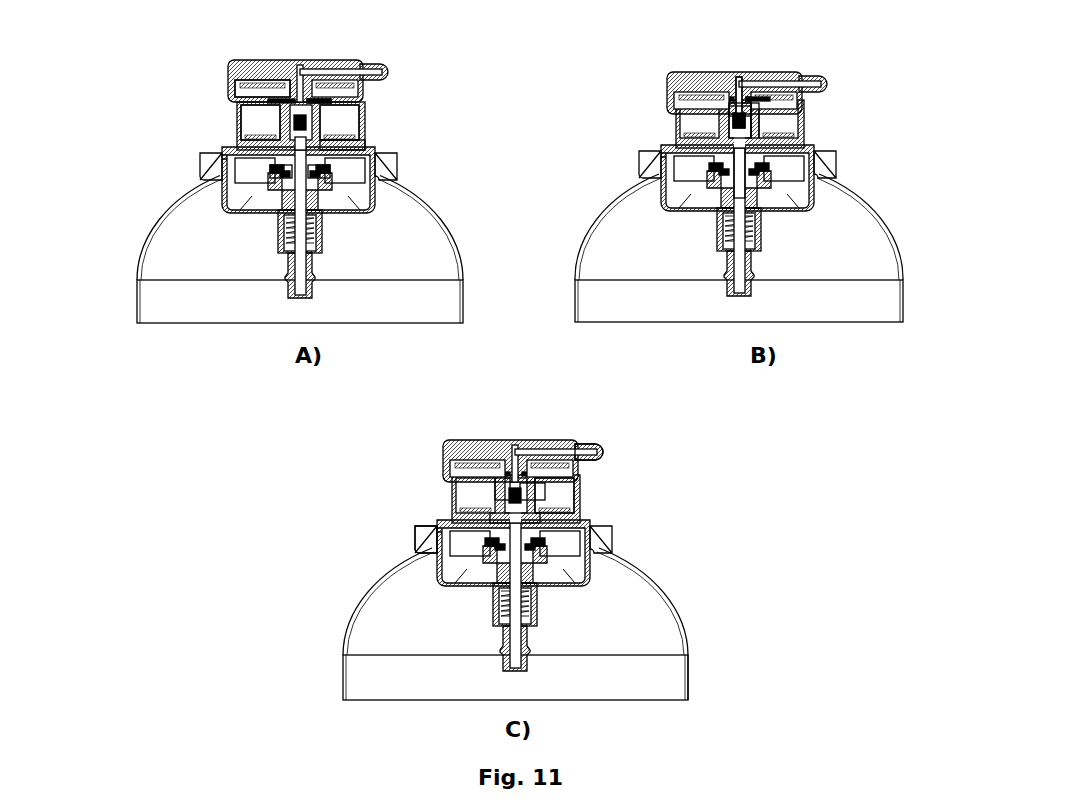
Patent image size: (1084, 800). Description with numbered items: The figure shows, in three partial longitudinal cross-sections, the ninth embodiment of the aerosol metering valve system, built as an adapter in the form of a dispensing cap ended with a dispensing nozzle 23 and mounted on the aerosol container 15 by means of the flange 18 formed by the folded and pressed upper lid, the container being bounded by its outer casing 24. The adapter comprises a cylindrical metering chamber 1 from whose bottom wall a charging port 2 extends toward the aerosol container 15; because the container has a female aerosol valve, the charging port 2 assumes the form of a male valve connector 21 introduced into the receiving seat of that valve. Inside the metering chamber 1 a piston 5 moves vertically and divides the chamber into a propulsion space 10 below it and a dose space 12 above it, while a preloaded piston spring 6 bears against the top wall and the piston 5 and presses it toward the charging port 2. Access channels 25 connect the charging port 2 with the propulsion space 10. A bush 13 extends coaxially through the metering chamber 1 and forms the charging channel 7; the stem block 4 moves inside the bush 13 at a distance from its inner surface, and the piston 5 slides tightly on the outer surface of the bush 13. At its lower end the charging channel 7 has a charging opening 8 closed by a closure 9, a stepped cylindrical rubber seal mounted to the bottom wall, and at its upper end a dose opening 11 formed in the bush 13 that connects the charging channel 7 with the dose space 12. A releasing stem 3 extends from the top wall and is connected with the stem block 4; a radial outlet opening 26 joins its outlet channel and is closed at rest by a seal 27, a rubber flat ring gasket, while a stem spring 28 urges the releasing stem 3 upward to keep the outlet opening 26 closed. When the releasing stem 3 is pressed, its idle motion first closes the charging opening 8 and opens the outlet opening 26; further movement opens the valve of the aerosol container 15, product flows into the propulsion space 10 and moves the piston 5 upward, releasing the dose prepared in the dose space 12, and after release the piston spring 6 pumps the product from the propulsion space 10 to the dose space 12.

The metering chamber 1 is at (732, 130).
The charging port 2 is at (730, 157).
The releasing stem 3 is at (747, 93).
The stem block 4 is at (538, 493).
The piston 5 is at (357, 140).
The piston spring 6 is at (340, 123).
The charging channel 7 is at (503, 495).
The charging opening 8 is at (298, 143).
The closure 9 is at (737, 132).
The propulsion space 10 is at (567, 508).
The dose opening 11 is at (320, 105).
The dose space 12 is at (252, 118).
The bush 13 is at (758, 130).
The aerosol container 15 is at (346, 631).
The flange 18 is at (418, 537).
The male valve connector 21 is at (290, 165).
The dispensing nozzle 23 is at (603, 453).
The outer casing 24 is at (688, 667).
The access channels 25 is at (500, 517).
The outlet opening 26 is at (753, 100).
The seal 27 is at (743, 110).
The stem spring 28 is at (270, 87).